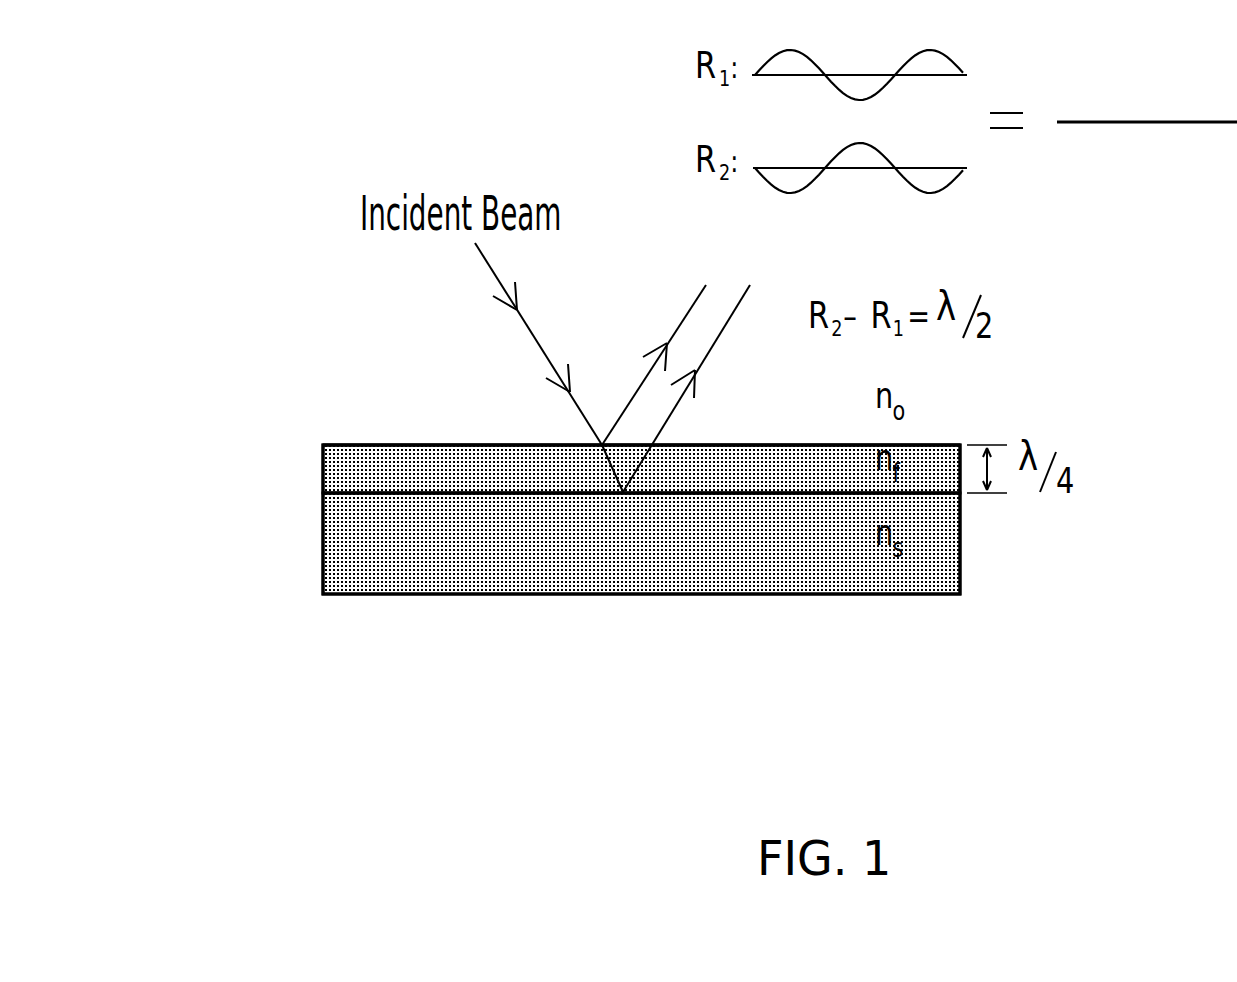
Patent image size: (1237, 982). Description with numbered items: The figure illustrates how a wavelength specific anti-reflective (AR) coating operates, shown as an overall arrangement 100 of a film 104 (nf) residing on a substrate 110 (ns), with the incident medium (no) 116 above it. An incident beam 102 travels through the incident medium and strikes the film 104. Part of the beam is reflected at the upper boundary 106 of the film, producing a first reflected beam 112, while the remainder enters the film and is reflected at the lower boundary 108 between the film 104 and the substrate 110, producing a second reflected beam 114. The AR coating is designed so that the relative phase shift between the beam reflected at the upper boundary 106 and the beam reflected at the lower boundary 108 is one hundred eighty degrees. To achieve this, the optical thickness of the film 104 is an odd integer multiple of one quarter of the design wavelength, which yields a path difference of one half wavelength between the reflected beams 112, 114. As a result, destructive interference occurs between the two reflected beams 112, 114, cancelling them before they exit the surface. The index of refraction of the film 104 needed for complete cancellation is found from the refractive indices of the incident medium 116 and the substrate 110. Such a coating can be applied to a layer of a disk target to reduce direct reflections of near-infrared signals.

The optical structure 100 is at (513, 517).
The incident beam 102 is at (513, 367).
The film 104 is at (614, 438).
The upper boundary 106 is at (578, 353).
The lower boundary 108 is at (578, 454).
The substrate 110 is at (597, 537).
The reflected beam 112 is at (663, 343).
The reflected beam 114 is at (724, 367).
The ambient medium 116 is at (963, 401).